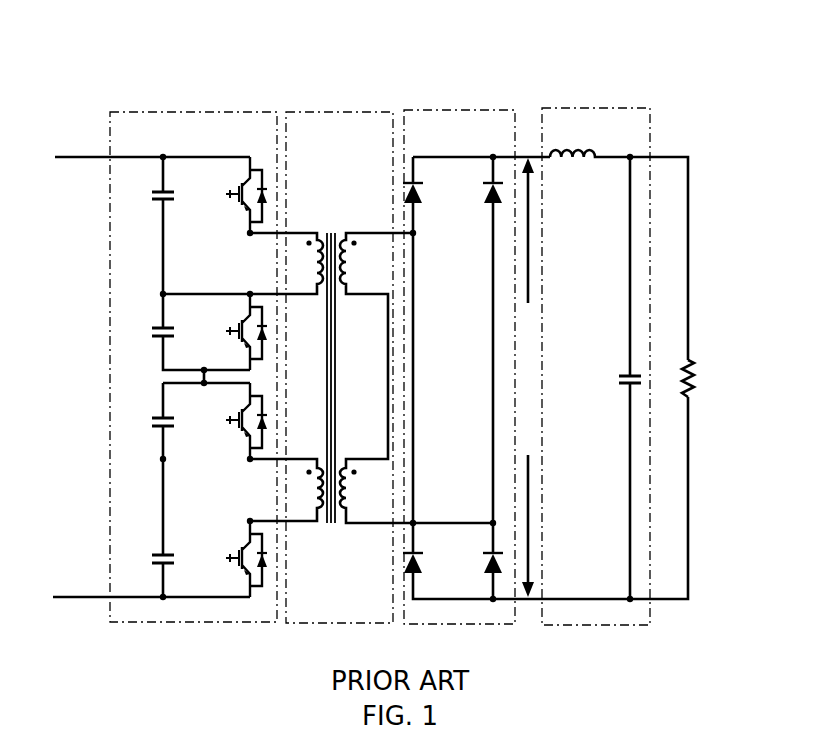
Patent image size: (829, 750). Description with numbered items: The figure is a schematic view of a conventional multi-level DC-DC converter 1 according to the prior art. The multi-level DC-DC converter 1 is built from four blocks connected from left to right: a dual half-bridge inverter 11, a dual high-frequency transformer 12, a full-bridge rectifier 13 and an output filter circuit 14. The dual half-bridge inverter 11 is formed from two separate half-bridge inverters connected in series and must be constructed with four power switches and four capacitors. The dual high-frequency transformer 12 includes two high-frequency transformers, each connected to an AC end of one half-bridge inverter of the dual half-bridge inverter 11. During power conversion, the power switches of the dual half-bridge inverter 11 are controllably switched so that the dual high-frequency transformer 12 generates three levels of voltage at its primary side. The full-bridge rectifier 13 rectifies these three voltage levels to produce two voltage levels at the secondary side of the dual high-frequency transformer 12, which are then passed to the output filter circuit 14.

The multi-level DC-DC converter 1 is at (698, 128).
The dual half-bridge inverter 11 is at (177, 112).
The dual high-frequency transformer 12 is at (330, 112).
The full-bridge rectifier 13 is at (468, 110).
The output filter circuit 14 is at (597, 108).